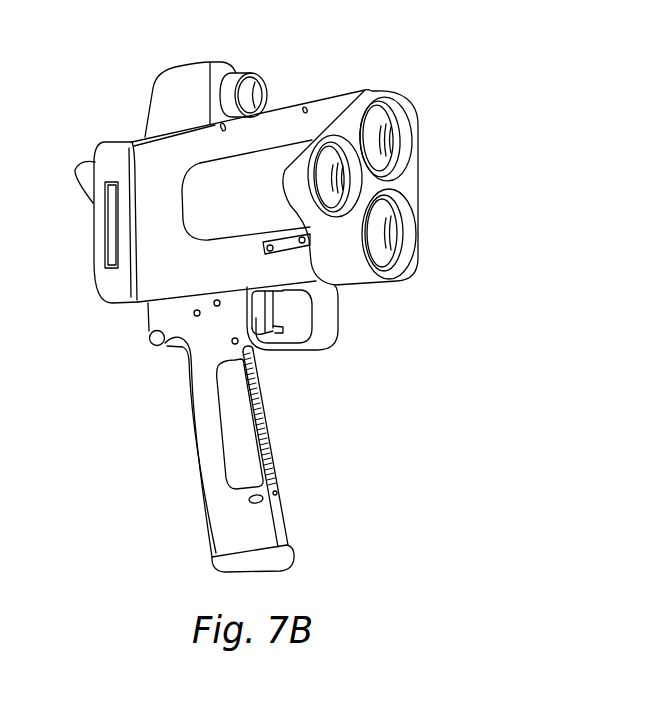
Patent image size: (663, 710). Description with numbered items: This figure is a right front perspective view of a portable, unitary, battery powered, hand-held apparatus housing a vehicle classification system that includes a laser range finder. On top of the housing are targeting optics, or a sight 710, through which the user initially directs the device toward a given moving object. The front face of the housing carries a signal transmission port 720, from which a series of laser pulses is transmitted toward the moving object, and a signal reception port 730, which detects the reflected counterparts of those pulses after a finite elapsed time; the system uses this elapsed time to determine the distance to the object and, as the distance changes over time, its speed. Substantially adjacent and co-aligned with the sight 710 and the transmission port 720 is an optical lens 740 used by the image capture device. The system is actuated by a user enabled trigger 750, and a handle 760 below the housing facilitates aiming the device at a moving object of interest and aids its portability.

The sight 710 is at (253, 87).
The signal transmission port 720 is at (378, 131).
The signal reception port 730 is at (388, 222).
The optical lens 740 is at (320, 173).
The trigger 750 is at (278, 328).
The handle 760 is at (204, 476).